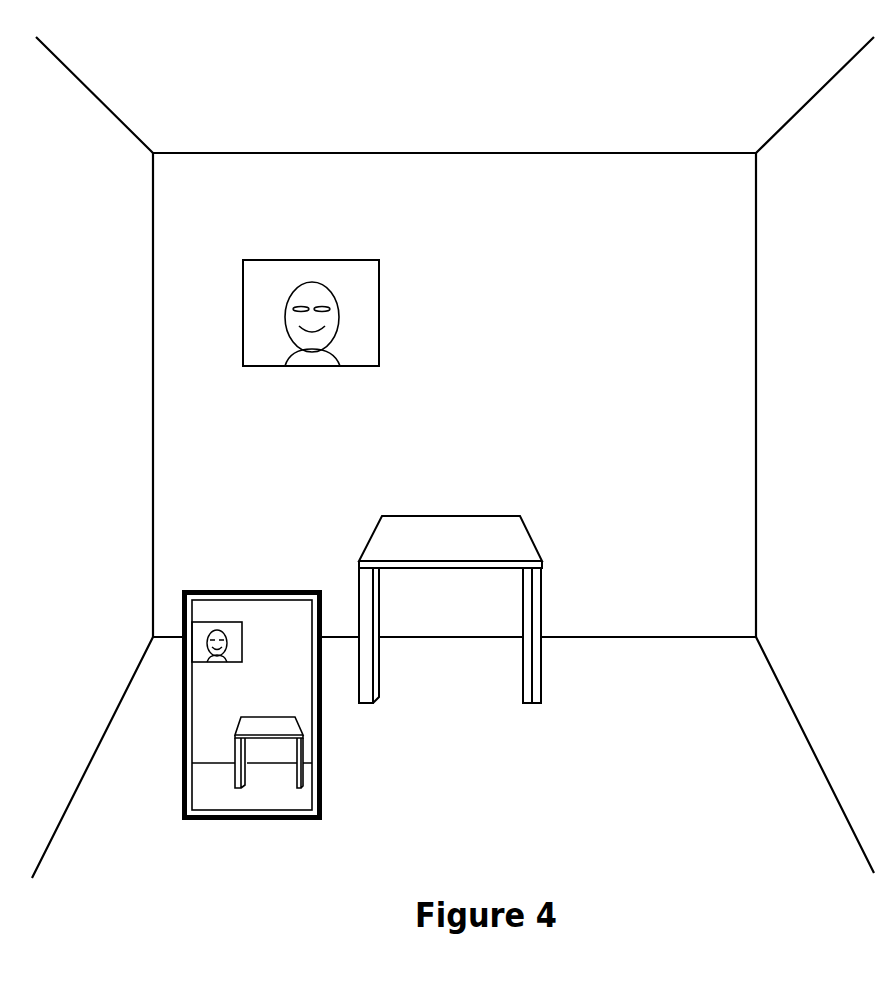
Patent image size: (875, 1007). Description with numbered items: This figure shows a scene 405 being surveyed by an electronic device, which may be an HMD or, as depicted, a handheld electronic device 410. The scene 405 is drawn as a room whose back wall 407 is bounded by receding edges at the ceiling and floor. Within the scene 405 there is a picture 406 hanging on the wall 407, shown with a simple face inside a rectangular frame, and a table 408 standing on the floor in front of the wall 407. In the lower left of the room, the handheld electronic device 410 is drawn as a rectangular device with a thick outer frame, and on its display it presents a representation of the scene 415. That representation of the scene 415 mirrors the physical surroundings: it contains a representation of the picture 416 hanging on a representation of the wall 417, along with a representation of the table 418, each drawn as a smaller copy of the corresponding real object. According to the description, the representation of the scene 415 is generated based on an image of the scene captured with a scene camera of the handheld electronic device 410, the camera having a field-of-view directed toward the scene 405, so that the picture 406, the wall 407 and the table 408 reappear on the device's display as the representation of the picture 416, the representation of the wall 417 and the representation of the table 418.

The scene 405 is at (743, 134).
The picture 406 is at (351, 260).
The wall 407 is at (535, 353).
The table 408 is at (467, 516).
The handheld electronic device 410 is at (250, 590).
The representation of the scene 415 is at (298, 693).
The representation of the picture 416 is at (233, 622).
The representation of the wall 417 is at (297, 663).
The representation of the table 418 is at (238, 718).